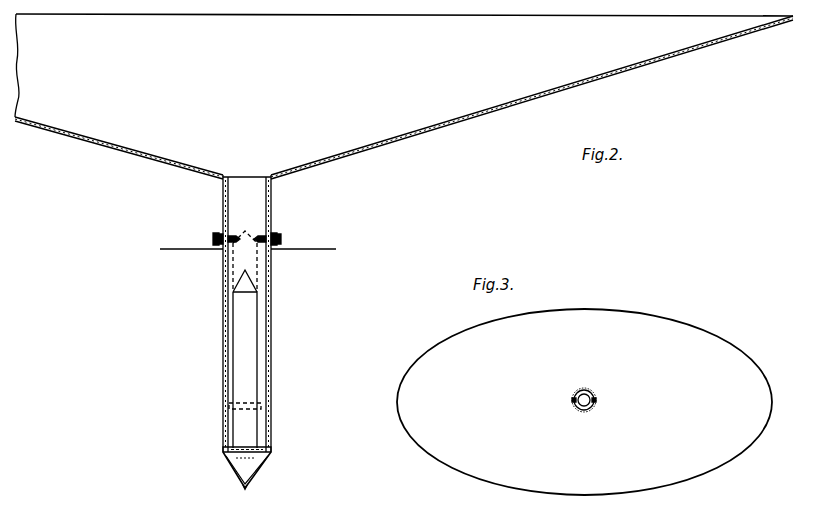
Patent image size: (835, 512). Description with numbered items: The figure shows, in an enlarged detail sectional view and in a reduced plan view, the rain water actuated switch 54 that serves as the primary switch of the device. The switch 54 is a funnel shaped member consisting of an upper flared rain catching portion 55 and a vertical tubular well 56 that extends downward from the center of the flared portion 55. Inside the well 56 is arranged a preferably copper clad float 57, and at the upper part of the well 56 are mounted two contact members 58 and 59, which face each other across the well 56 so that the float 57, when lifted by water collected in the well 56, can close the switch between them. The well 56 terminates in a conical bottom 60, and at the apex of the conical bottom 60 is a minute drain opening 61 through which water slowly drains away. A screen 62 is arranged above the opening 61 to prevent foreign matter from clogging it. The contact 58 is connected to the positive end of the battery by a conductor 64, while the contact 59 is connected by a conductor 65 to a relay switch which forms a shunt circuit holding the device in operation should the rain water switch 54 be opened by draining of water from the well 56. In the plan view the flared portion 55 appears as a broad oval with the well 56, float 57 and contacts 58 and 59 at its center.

In FIG. 2, the rain water actuated switch 54 is at (197, 204).
In FIG. 2, the upper flared rain catching portion 55 is at (613, 72).
In FIG. 3, the upper flared rain catching portion 55 is at (685, 338).
In FIG. 2, the vertical tubular well 56 is at (223, 308).
In FIG. 3, the vertical tubular well 56 is at (590, 395).
In FIG. 2, the float 57 is at (252, 336).
In FIG. 3, the float 57 is at (578, 395).
In FIG. 2, the contact member 58 is at (266, 235).
In FIG. 3, the contact member 58 is at (592, 406).
In FIG. 2, the contact member 59 is at (228, 235).
In FIG. 3, the contact member 59 is at (580, 408).
In FIG. 2, the conical bottom 60 is at (233, 470).
In FIG. 2, the drain opening 61 is at (246, 485).
In FIG. 2, the screen 62 is at (223, 455).
In FIG. 2, the conductor 64 is at (325, 252).
In FIG. 2, the conductor 65 is at (180, 252).